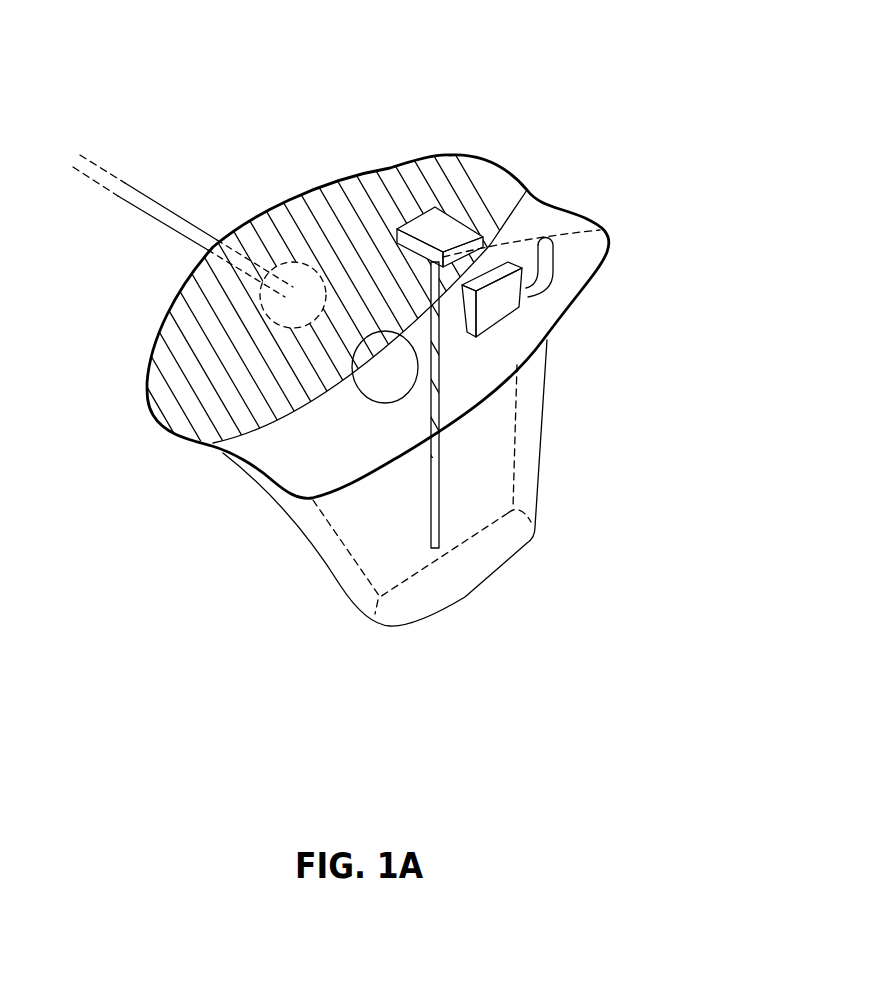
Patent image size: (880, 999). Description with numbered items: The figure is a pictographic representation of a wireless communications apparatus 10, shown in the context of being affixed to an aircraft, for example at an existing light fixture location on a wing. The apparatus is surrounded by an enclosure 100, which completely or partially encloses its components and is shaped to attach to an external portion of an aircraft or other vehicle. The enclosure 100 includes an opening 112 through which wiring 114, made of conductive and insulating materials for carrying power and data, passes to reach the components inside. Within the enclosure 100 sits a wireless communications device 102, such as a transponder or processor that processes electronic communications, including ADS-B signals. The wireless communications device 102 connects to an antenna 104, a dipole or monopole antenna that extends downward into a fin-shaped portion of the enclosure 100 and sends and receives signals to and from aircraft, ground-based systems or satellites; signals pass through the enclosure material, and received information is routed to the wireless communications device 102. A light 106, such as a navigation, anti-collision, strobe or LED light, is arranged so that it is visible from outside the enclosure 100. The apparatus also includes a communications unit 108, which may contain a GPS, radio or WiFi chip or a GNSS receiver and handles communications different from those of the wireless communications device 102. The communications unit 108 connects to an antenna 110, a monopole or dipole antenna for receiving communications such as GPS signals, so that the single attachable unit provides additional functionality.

The wireless communications apparatus 10 is at (596, 580).
The enclosure 100 is at (292, 455).
The wireless communications device 102 is at (433, 228).
The antenna 104 is at (437, 490).
The light 106 is at (387, 378).
The communications unit 108 is at (503, 303).
The antenna 110 is at (547, 267).
The opening 112 is at (277, 312).
The wiring 114 is at (172, 216).